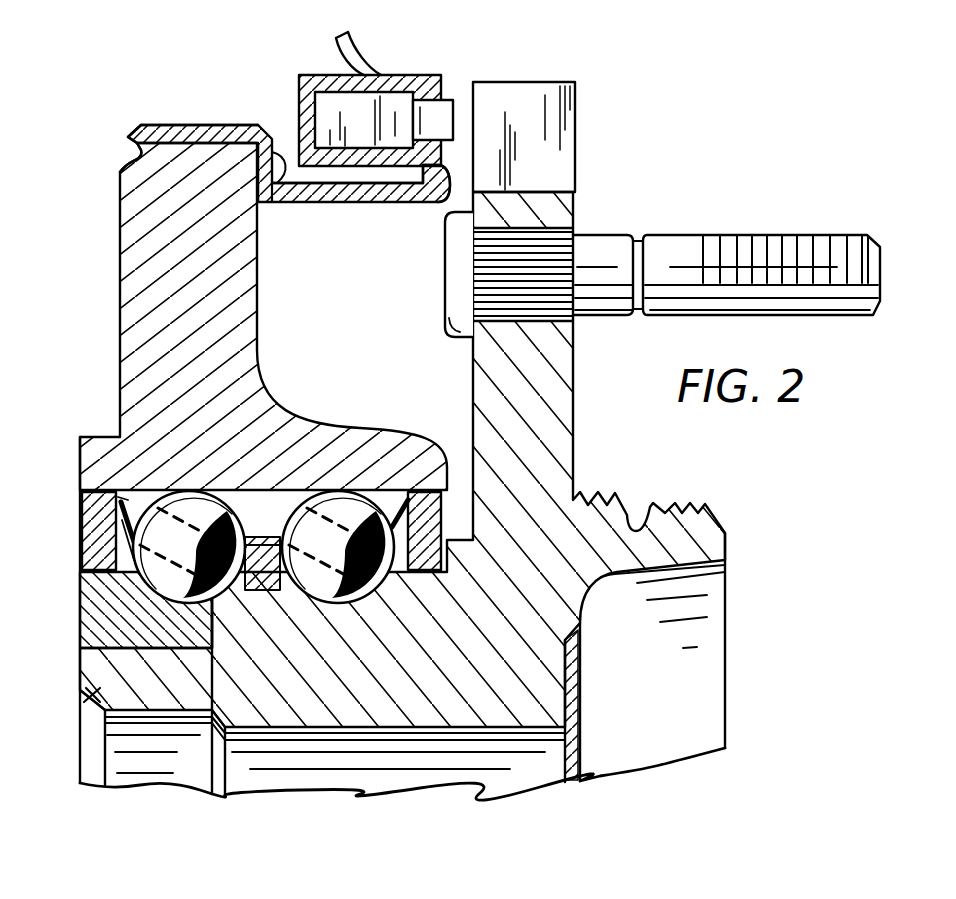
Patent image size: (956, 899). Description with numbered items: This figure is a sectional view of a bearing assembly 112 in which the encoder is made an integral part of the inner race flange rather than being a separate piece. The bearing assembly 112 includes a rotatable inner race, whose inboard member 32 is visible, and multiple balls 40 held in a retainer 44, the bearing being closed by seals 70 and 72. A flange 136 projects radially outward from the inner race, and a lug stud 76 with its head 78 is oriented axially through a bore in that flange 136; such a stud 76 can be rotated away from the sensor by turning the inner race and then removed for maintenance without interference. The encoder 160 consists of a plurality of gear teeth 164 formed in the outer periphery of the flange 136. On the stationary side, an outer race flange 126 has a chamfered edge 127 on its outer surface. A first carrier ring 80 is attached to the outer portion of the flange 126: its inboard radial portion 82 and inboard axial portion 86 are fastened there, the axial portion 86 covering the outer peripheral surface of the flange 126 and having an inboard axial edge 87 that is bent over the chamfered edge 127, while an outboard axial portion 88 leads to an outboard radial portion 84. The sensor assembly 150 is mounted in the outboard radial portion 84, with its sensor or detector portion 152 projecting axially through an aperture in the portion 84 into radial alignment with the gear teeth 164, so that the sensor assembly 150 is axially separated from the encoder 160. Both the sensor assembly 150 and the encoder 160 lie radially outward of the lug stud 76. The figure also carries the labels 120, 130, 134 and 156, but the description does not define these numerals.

The bearing assembly 112 is at (250, 141).
The housing 120 is at (367, 486).
The flange 126 is at (120, 243).
The chamfered edge 127 is at (140, 158).
The inboard axial portion 86 is at (205, 126).
The inboard axial edge 87 is at (134, 130).
The first carrier ring 80 is at (250, 171).
The inboard radial portion 82 is at (274, 203).
The outboard radial portion 84 is at (445, 166).
The outboard axial portion 88 is at (320, 204).
The sensor assembly 150 is at (345, 89).
The sensor or detector portion 152 is at (315, 107).
The sensor cable 156 is at (321, 56).
The encoder 160 is at (635, 181).
The gear teeth 164 is at (576, 133).
The lug stud 76 is at (722, 233).
The head 78 is at (445, 290).
The flange 136 is at (567, 423).
The lower face 130 is at (473, 735).
The chamfer 134 is at (95, 692).
The inboard member 32 is at (86, 628).
The balls 40 is at (233, 513).
The retainer 44 is at (130, 512).
The seal 70 is at (83, 537).
The seal 72 is at (445, 539).